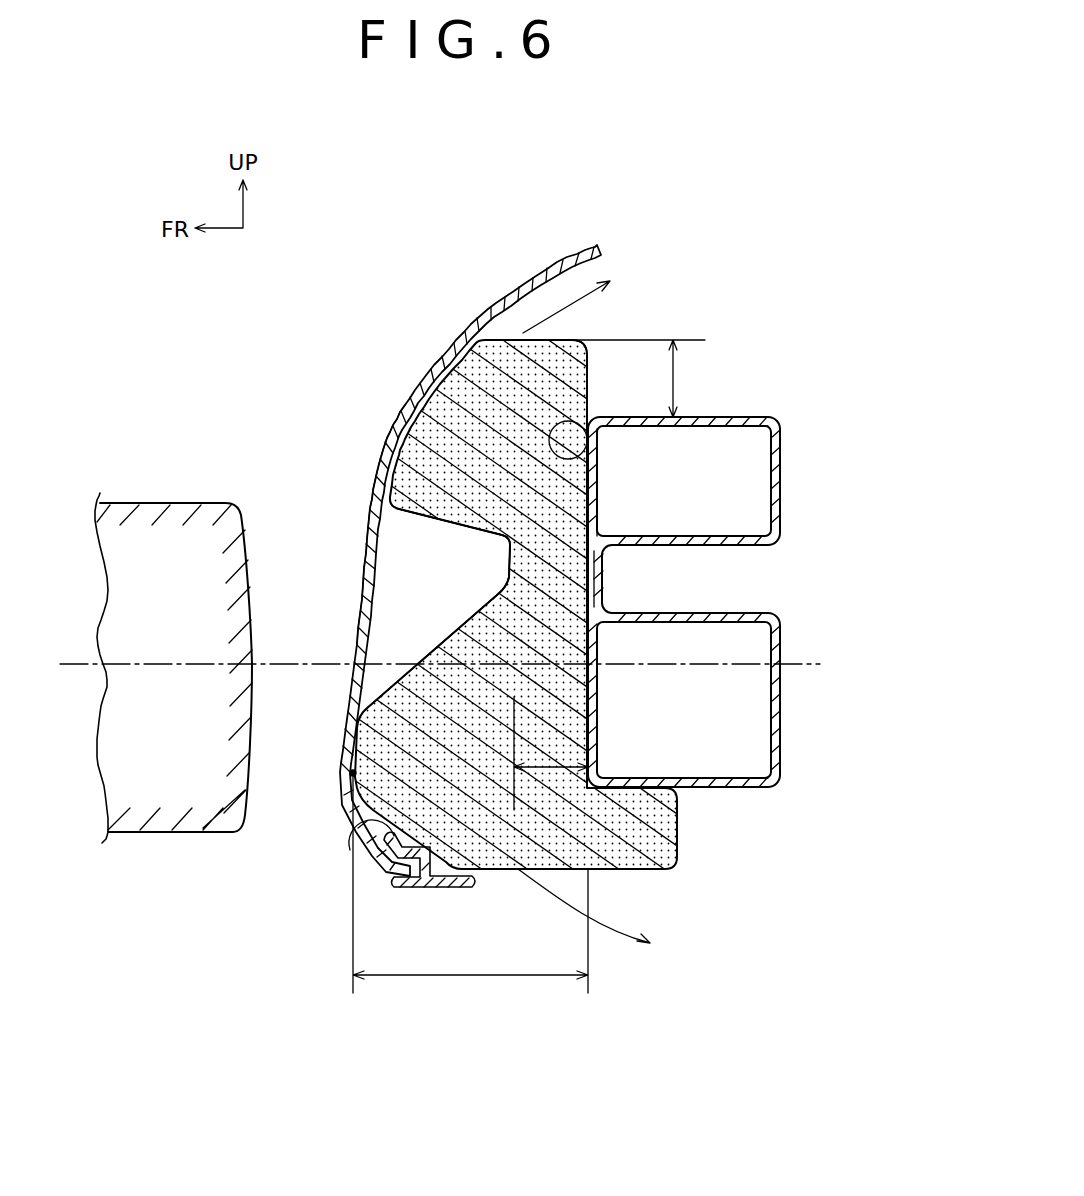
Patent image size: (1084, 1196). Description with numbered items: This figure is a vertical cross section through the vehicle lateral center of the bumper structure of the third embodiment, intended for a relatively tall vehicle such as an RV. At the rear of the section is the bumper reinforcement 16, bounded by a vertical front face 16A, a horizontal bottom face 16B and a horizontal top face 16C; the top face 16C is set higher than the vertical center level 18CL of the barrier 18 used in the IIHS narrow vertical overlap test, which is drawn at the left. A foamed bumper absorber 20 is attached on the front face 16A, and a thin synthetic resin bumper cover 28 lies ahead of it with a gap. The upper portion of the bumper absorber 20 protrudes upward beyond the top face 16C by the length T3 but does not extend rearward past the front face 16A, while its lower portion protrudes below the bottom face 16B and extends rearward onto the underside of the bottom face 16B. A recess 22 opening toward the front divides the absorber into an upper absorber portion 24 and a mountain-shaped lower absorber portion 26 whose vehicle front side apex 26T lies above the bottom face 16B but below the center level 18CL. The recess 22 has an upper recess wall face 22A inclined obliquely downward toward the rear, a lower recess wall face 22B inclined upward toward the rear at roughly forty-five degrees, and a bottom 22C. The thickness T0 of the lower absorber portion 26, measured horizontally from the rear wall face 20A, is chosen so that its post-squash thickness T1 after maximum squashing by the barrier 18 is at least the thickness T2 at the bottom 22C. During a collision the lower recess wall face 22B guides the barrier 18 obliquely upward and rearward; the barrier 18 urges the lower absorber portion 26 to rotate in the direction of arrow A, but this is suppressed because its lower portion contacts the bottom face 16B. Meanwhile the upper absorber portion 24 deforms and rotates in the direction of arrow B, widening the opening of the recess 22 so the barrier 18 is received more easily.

The bumper reinforcement 16 is at (781, 408).
The front face 16A is at (587, 428).
The bottom face 16B is at (735, 790).
The top face 16C is at (735, 412).
The barrier 18 is at (170, 845).
The vertical center level 18CL is at (814, 668).
The bumper absorber 20 is at (688, 872).
The rear wall face 20A is at (587, 372).
The recess 22 is at (505, 543).
The upper recess wall face 22A is at (420, 512).
The lower recess wall face 22B is at (444, 650).
The bottom 22C is at (505, 567).
The upper absorber portion 24 is at (410, 387).
The lower absorber portion 26 is at (353, 850).
The vehicle front side apex 26T is at (338, 779).
The bumper cover 28 is at (573, 258).
The thickness T0 is at (476, 978).
The post-squash thickness T1 is at (578, 765).
The thickness T2 is at (560, 520).
The length T3 is at (680, 378).
The arrow A is at (624, 936).
The arrow B is at (585, 304).